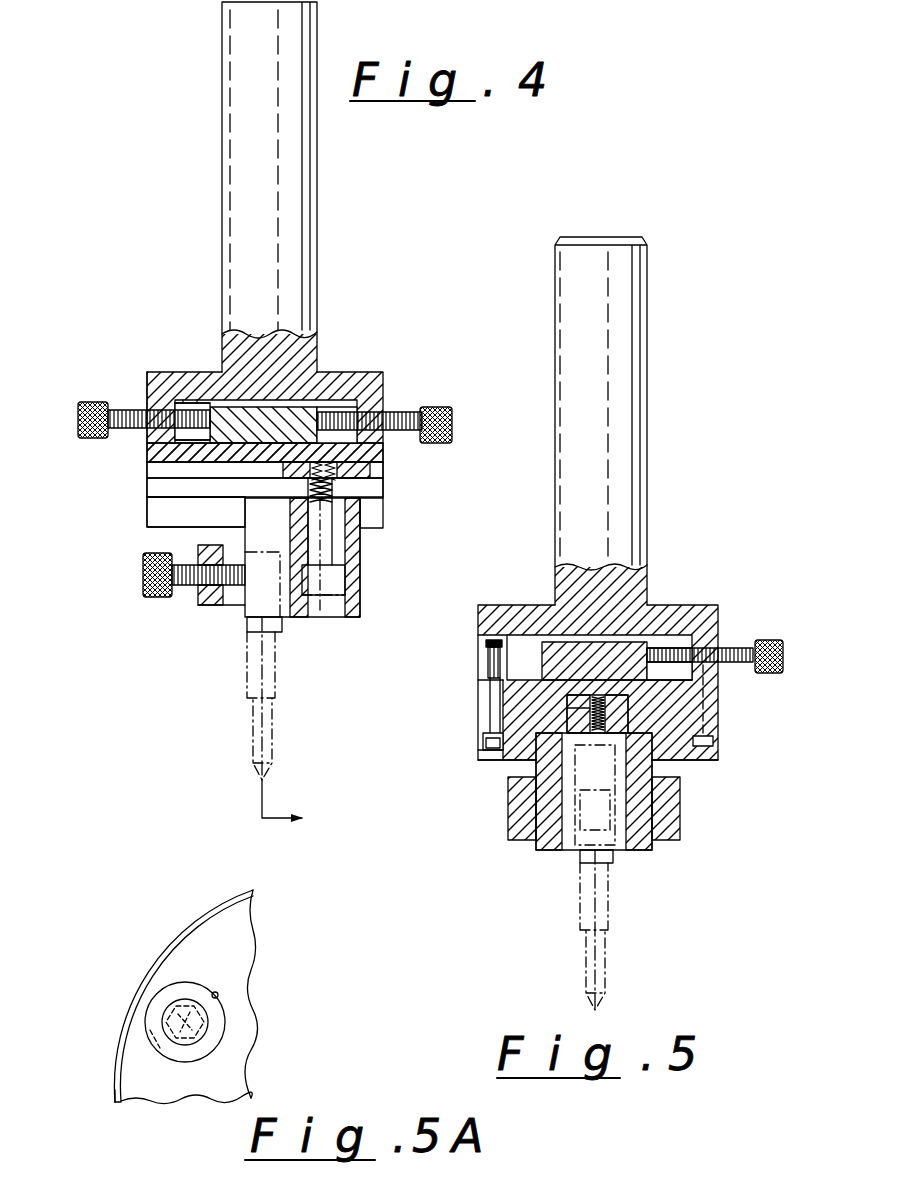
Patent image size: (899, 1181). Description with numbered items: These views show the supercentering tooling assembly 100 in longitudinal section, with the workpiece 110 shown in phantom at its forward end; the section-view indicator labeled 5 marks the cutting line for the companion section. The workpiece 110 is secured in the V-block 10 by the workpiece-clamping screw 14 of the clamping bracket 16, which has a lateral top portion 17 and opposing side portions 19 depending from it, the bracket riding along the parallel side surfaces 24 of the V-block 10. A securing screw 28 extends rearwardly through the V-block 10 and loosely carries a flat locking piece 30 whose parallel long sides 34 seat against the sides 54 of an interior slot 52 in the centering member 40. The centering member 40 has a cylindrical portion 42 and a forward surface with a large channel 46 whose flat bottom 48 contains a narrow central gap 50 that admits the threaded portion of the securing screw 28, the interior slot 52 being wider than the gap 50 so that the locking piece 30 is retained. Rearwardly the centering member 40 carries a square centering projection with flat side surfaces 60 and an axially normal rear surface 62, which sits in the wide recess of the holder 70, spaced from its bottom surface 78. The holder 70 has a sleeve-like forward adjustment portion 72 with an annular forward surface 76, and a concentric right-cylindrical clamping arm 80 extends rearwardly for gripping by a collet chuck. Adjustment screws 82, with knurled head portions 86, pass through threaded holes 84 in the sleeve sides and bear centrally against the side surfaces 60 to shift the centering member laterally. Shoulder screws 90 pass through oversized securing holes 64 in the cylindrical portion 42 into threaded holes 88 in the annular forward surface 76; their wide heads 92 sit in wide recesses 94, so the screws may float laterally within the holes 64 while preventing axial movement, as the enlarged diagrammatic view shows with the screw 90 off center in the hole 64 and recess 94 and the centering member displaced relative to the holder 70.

In FIG. 4, the section line for FIG. 5 is at (296, 811).
In FIG. 4, the V-block 10 is at (296, 622).
In FIG. 5, the V-block 10 is at (638, 858).
In FIG. 4, the workpiece-clamping screw 14 is at (150, 600).
In FIG. 4, the clamping bracket 16 is at (206, 607).
In FIG. 5, the clamping bracket 16 is at (668, 842).
In FIG. 4, the top portion 17 is at (200, 595).
In FIG. 5, the side portions 19 is at (680, 815).
In FIG. 5, the side surfaces 24 is at (692, 742).
In FIG. 4, the securing screw 28 is at (325, 548).
In FIG. 5, the securing screw 28 is at (597, 698).
In FIG. 4, the locking piece 30 is at (369, 470).
In FIG. 5, the locking piece 30 is at (620, 712).
In FIG. 5, the long sides 34 is at (575, 712).
In FIG. 4, the centering member 40 is at (389, 509).
In FIG. 5, the centering member 40 is at (703, 768).
In FIG. 5A, the centering member 40 is at (181, 936).
In FIG. 5, the cylindrical portion 42 is at (480, 715).
In FIG. 5A, the cylindrical portion 42 is at (162, 965).
In FIG. 4, the large channel 46 is at (190, 520).
In FIG. 4, the bottom 48 is at (180, 505).
In FIG. 4, the central gap 50 is at (168, 492).
In FIG. 4, the interior slot 52 is at (175, 487).
In FIG. 5, the sides 54 is at (582, 698).
In FIG. 4, the side surfaces 60 is at (165, 437).
In FIG. 5, the side surfaces 60 is at (690, 672).
In FIG. 4, the rear surface 62 is at (228, 405).
In FIG. 5, the securing holes 64 is at (492, 697).
In FIG. 5A, the securing holes 64 is at (200, 990).
In FIG. 4, the holder 70 is at (387, 391).
In FIG. 5, the holder 70 is at (471, 623).
In FIG. 5A, the holder 70 is at (126, 1025).
In FIG. 4, the forward adjustment portion 72 is at (143, 387).
In FIG. 5, the forward adjustment portion 72 is at (478, 668).
In FIG. 5A, the forward adjustment portion 72 is at (115, 1078).
In FIG. 4, the annular forward surface 76 is at (178, 470).
In FIG. 4, the bottom surface 78 is at (190, 403).
In FIG. 4, the clamping arm 80 is at (222, 97).
In FIG. 5, the clamping arm 80 is at (555, 331).
In FIG. 4, the adjustment screws 82 is at (148, 412).
In FIG. 5, the adjustment screws 82 is at (705, 648).
In FIG. 4, the threaded holes 84 is at (145, 415).
In FIG. 4, the head portions 86 is at (83, 415).
In FIG. 5, the head portions 86 is at (768, 640).
In FIG. 5, the threaded holes 88 is at (490, 644).
In FIG. 5A, the threaded holes 88 is at (165, 1055).
In FIG. 5, the shoulder screws 90 is at (490, 727).
In FIG. 5A, the shoulder screws 90 is at (145, 1010).
In FIG. 5, the heads 92 is at (496, 746).
In FIG. 5A, the heads 92 is at (205, 1030).
In FIG. 5, the recesses 94 is at (483, 758).
In FIG. 5A, the recesses 94 is at (218, 996).
In FIG. 4, the supercentering tooling assembly 100 is at (146, 272).
In FIG. 5, the supercentering tooling assembly 100 is at (680, 568).
In FIG. 4, the workpiece 110 is at (252, 715).
In FIG. 5, the workpiece 110 is at (578, 917).